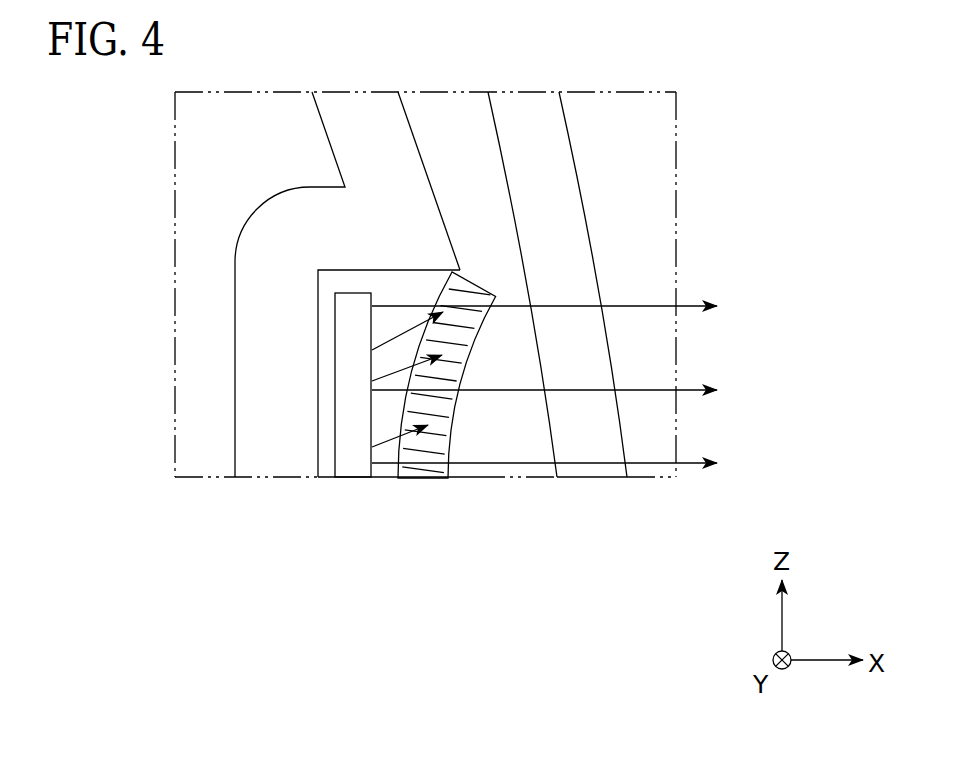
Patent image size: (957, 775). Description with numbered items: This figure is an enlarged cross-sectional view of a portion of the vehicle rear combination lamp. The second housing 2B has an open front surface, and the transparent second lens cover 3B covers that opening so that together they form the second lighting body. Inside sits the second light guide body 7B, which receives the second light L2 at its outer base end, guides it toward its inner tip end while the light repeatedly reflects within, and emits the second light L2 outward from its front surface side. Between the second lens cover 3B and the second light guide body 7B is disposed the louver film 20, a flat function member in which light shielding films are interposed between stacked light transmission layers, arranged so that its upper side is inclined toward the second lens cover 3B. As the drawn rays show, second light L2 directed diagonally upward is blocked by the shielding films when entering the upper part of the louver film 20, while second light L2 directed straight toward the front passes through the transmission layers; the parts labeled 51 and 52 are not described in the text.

The louver film 20 is at (479, 275).
The second housing 2B is at (282, 463).
The second light guide body 7B is at (353, 463).
The second lens cover 3B is at (592, 470).
The lens 51 is at (443, 412).
The lens surface 52 is at (423, 450).
The second light L2 is at (400, 333).